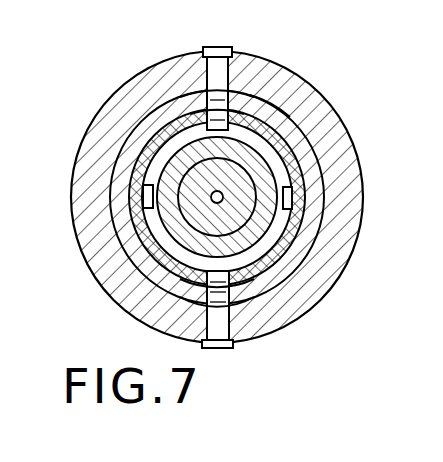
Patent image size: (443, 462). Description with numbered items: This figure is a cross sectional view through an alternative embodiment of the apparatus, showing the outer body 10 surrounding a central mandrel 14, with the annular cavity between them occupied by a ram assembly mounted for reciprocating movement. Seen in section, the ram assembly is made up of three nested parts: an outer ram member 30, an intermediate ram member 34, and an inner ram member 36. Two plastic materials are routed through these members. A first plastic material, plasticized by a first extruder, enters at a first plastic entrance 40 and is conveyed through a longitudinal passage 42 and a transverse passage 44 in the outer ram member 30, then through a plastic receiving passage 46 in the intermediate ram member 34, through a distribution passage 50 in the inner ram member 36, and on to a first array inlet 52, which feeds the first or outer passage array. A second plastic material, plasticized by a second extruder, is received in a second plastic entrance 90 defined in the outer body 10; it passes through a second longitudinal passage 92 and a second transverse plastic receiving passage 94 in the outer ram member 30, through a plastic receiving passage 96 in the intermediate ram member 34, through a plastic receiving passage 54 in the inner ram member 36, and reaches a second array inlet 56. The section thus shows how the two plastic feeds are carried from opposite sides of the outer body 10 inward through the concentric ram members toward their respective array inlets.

The outer body 10 is at (330, 108).
The mandrel 14 is at (262, 235).
The outer ram member 30 is at (312, 150).
The intermediate ram member 34 is at (300, 205).
The inner ram member 36 is at (278, 225).
The first plastic entrance 40 is at (225, 345).
The longitudinal passage 42 is at (222, 328).
The transverse passage 44 is at (208, 292).
The plastic receiving passage 46 is at (208, 280).
The distribution passage 50 is at (150, 220).
The first array inlet 52 is at (146, 192).
The plastic receiving passage 54 is at (262, 103).
The second array inlet 56 is at (290, 196).
The second plastic entrance 90 is at (223, 72).
The second longitudinal passage 92 is at (207, 82).
The second transverse plastic receiving passage 94 is at (218, 92).
The plastic receiving passage 96 is at (213, 117).